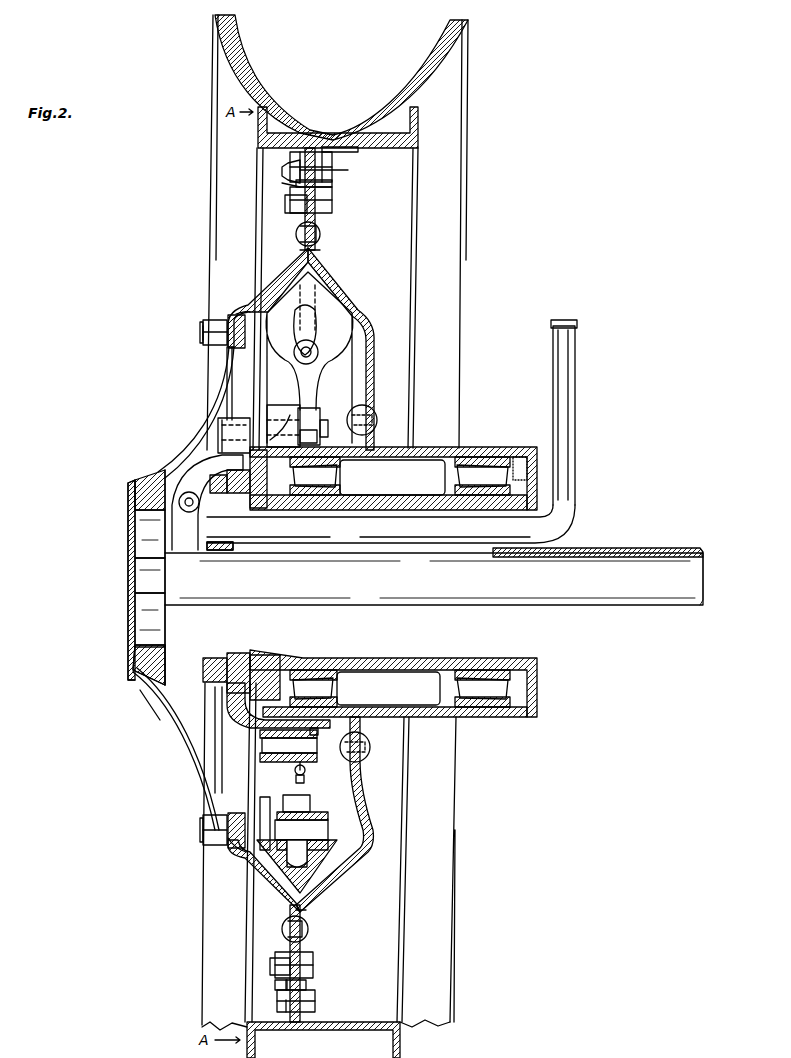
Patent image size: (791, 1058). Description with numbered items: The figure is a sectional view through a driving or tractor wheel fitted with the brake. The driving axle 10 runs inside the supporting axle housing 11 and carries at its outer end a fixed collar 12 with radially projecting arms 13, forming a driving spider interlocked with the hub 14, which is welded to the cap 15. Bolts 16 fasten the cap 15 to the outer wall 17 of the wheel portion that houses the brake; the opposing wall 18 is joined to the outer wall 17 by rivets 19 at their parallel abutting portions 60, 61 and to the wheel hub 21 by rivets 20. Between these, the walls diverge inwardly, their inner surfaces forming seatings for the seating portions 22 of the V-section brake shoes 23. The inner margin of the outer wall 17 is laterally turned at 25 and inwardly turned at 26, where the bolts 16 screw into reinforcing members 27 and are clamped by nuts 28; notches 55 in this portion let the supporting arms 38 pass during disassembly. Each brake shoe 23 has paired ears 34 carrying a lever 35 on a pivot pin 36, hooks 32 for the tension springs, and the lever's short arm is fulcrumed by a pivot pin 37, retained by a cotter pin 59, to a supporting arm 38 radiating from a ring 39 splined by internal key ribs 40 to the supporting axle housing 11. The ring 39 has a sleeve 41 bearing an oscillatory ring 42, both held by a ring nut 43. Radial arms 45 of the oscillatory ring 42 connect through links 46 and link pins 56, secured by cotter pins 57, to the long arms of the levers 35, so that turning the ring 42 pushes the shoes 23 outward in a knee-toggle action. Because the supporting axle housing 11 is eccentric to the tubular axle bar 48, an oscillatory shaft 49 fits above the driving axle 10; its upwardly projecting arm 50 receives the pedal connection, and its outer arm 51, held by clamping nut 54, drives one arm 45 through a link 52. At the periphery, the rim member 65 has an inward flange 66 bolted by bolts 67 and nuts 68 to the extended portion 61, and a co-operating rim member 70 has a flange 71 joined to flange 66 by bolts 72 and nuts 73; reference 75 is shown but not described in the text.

The driving axle 10 is at (434, 579).
The supporting axle housing 11 is at (420, 495).
The fixed collar 12 is at (167, 610).
The radially projecting arms 13 is at (135, 575).
The hub 14 is at (133, 478).
The cap 15 is at (172, 700).
The bolts 16 is at (203, 340).
The outer wall 17 is at (282, 284).
The opposing wall 18 is at (338, 290).
The bolts or rivets 19 is at (320, 236).
The bolts or rivets 20 is at (377, 420).
The wheel hub 21 is at (390, 707).
The seating portions 22 is at (270, 292).
The brake shoes 23 is at (360, 855).
The laterally turned portion 25 is at (236, 312).
The inwardly turned portion 26 is at (228, 355).
The reinforcing member 27 is at (200, 325).
The nuts 28 is at (200, 330).
The hooks 32 is at (305, 772).
The paired ears 34 is at (330, 808).
The lever 35 is at (318, 437).
The pivot pin 36 is at (301, 822).
The pivot pin 37 is at (322, 420).
The supporting arm 38 is at (282, 405).
The ring 39 is at (227, 698).
The internal key ribs 40 is at (250, 660).
The hub or sleeve 41 is at (255, 508).
The oscillatory ring 42 is at (280, 510).
The ring nut 43 is at (203, 668).
The radial arms 45 is at (192, 740).
The link 46 is at (303, 760).
The supporting tubular axle bar or housing 48 is at (655, 550).
The oscillatory shaft 49 is at (391, 524).
The upwardly projecting arm 50 is at (567, 410).
The arm 51 is at (197, 470).
The link 52 is at (240, 418).
The clamping nut 54 is at (191, 510).
The notches 55 is at (232, 386).
The link pins 56 is at (288, 746).
The cotter pins 57 is at (318, 735).
The cotter pins 59 is at (317, 408).
The abutting portion 60 is at (305, 250).
The abutting portion 61 is at (316, 250).
The rim member 65 is at (280, 142).
The inwardly extending flange 66 is at (282, 171).
The bolts 67 is at (332, 200).
The clamping nuts 68 is at (296, 213).
The co-operating rim member 70 is at (410, 140).
The inwardly projecting flange 71 is at (332, 183).
The bolts 72 is at (332, 165).
The clamping nuts 73 is at (295, 185).
The lock wire 75 is at (336, 170).